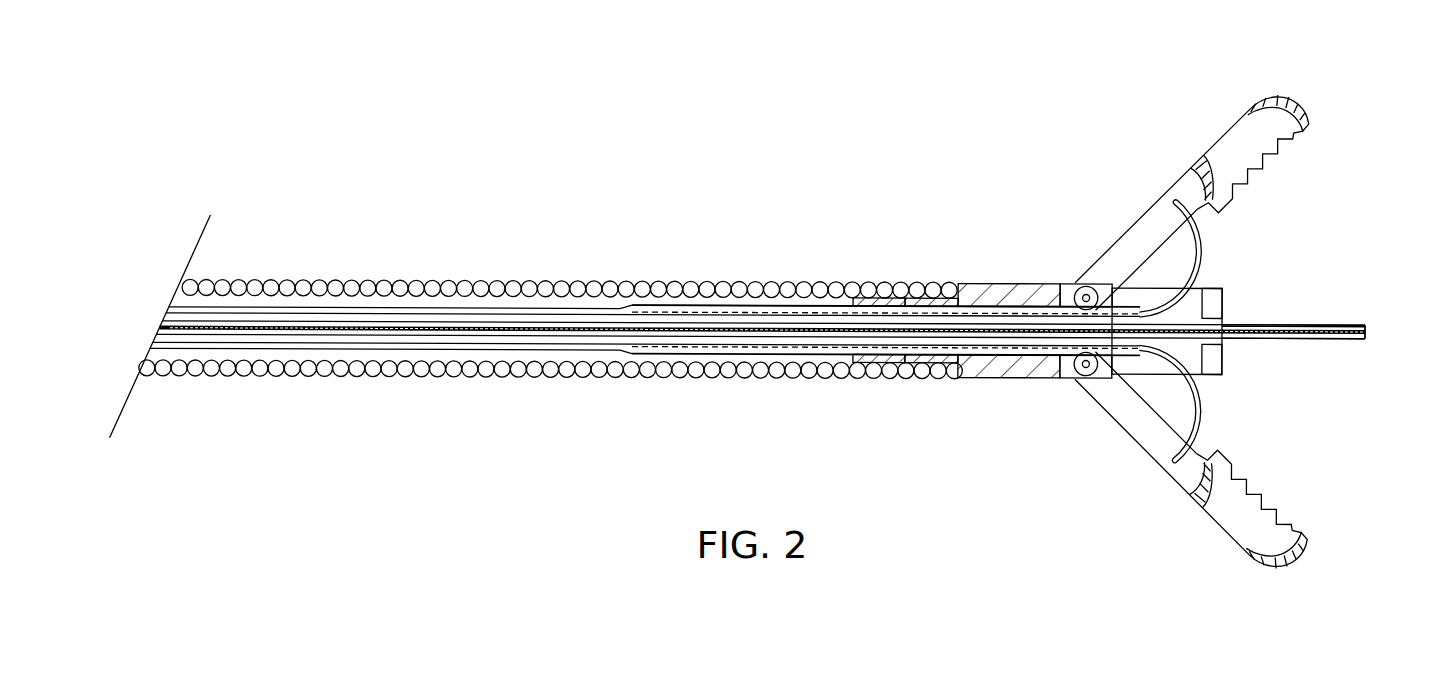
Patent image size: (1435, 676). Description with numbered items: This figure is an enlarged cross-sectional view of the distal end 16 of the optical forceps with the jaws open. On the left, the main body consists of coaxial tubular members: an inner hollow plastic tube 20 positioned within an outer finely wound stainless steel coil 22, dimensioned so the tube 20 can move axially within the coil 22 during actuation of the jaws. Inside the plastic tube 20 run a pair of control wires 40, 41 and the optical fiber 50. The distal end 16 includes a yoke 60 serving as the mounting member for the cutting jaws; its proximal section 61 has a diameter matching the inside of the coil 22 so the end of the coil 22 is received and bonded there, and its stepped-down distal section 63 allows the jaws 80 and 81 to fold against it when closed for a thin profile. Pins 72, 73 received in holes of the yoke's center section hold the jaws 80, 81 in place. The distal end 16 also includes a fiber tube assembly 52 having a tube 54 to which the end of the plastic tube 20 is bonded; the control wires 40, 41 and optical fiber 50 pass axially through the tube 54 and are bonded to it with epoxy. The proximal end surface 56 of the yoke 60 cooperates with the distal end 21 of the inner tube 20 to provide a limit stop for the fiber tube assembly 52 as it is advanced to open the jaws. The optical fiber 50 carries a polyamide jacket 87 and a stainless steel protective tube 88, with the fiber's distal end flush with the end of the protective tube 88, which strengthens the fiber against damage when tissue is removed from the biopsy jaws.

The distal end 16 is at (953, 112).
The plastic tube 20 is at (430, 306).
The distal end of the inner tube 21 is at (840, 303).
The coil 22 is at (316, 279).
The control wire 40 is at (490, 321).
The control wire 41 is at (490, 337).
The optical fiber 50 is at (1367, 333).
The fiber tube assembly 52 is at (695, 304).
The tube 54 is at (975, 280).
The proximal end surface 56 is at (838, 303).
The yoke 60 is at (1037, 280).
The proximal section 61 is at (893, 308).
The distal section 63 is at (1218, 357).
The pin 72 is at (1086, 283).
The pin 73 is at (1086, 373).
The jaw 80 is at (1258, 96).
The jaw 81 is at (1298, 558).
The jacket 87 is at (1367, 322).
The protective tube 88 is at (1345, 320).